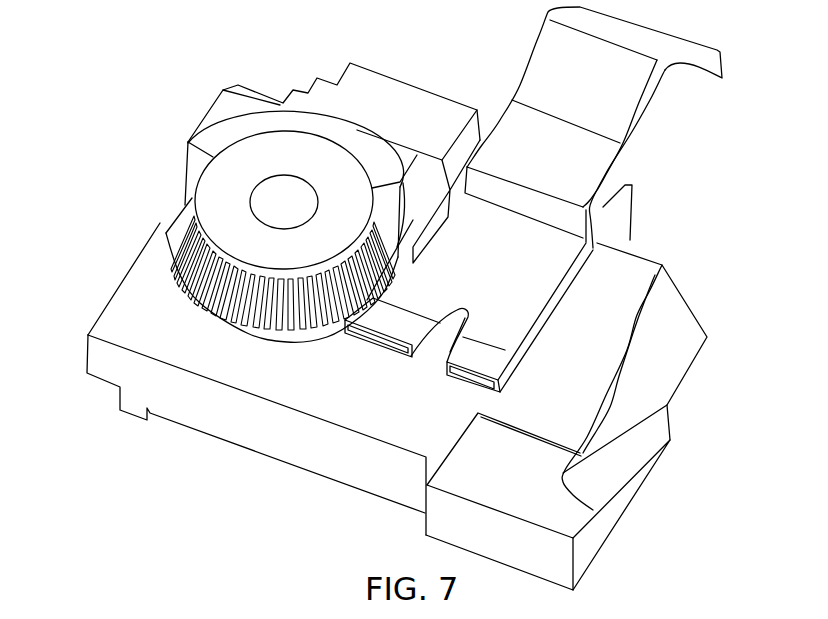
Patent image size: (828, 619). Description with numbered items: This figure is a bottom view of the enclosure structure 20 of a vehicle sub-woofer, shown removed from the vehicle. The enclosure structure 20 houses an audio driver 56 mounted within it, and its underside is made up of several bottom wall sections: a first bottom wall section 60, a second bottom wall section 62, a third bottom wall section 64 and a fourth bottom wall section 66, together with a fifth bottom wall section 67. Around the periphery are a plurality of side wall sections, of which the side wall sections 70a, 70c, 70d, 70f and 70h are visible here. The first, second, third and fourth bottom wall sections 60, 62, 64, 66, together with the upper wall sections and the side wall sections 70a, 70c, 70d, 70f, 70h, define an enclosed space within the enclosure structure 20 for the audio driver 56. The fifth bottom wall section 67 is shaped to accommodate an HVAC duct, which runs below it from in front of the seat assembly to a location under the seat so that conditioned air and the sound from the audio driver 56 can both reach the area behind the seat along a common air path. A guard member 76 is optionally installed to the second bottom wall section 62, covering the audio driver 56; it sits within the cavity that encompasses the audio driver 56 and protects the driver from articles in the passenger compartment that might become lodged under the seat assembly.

The enclosure structure 20 is at (106, 108).
The audio driver 56 is at (237, 315).
The first bottom wall section 60 is at (382, 98).
The second bottom wall section 62 is at (387, 252).
The third bottom wall section 64 is at (125, 315).
The fourth bottom wall section 66 is at (568, 513).
The fifth bottom wall section 67 is at (432, 355).
The side wall section 70a is at (296, 445).
The side wall section 70c is at (532, 553).
The side wall section 70d is at (665, 373).
The side wall section 70f is at (458, 105).
The side wall section 70h is at (140, 262).
The guard member 76 is at (215, 178).